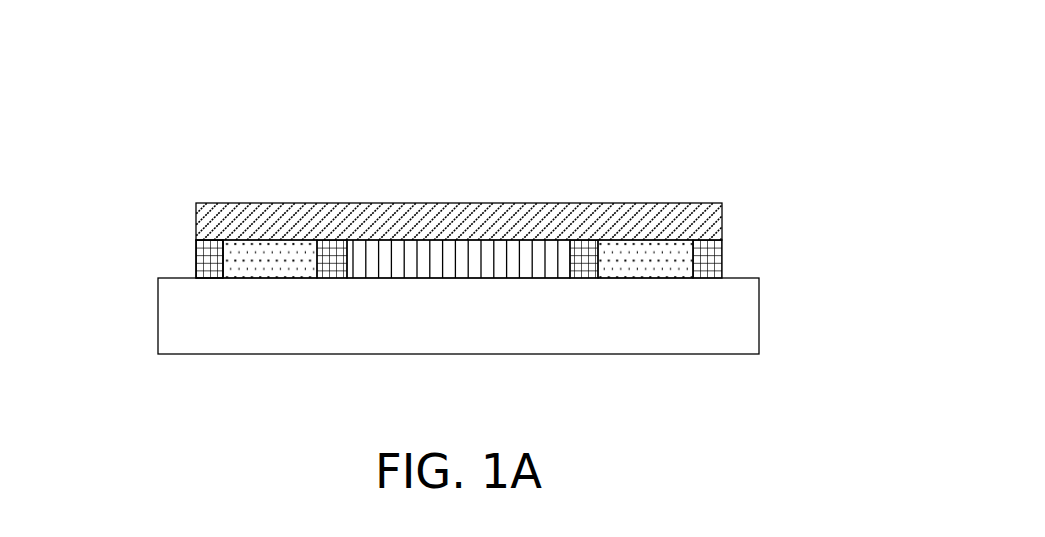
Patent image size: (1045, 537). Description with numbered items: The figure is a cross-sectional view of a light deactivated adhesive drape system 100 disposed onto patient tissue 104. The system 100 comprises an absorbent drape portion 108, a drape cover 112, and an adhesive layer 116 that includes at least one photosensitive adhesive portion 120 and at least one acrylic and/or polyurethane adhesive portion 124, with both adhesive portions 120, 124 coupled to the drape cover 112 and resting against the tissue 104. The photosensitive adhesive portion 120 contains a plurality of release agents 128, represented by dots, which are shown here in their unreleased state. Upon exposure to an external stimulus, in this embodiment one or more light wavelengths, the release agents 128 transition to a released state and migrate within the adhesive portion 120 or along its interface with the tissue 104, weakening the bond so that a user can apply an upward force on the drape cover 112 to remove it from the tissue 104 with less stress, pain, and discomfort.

The light deactivated adhesive drape system 100 is at (92, 68).
The patient tissue 104 is at (760, 320).
The absorbent drape portion 108 is at (496, 258).
The drape cover 112 is at (722, 223).
The adhesive layer 116 is at (722, 260).
The photosensitive adhesive portion 120 is at (665, 260).
The acrylic and/or polyurethane adhesive portion 124 is at (196, 261).
The release agent 128 is at (258, 262).